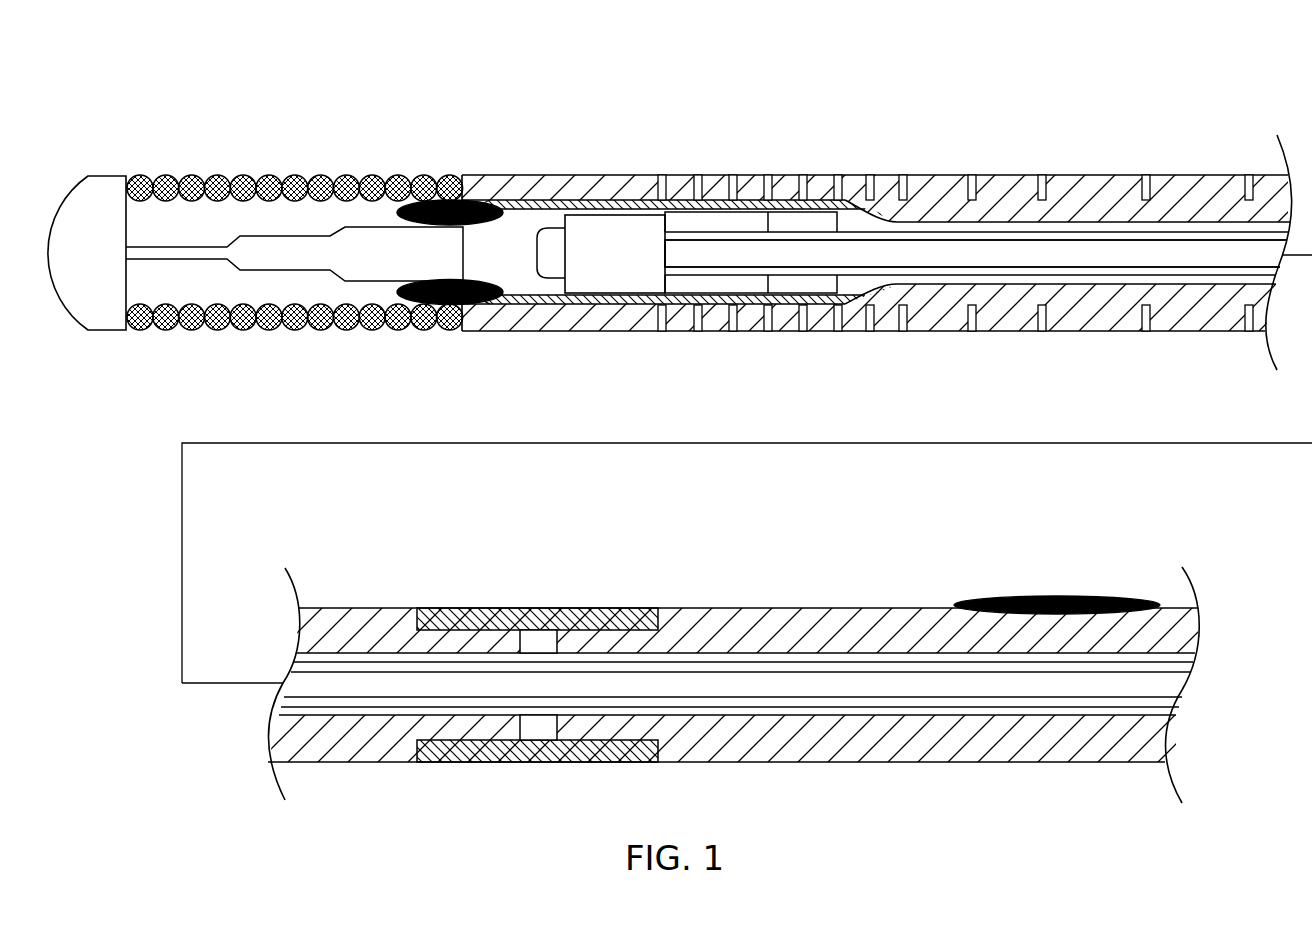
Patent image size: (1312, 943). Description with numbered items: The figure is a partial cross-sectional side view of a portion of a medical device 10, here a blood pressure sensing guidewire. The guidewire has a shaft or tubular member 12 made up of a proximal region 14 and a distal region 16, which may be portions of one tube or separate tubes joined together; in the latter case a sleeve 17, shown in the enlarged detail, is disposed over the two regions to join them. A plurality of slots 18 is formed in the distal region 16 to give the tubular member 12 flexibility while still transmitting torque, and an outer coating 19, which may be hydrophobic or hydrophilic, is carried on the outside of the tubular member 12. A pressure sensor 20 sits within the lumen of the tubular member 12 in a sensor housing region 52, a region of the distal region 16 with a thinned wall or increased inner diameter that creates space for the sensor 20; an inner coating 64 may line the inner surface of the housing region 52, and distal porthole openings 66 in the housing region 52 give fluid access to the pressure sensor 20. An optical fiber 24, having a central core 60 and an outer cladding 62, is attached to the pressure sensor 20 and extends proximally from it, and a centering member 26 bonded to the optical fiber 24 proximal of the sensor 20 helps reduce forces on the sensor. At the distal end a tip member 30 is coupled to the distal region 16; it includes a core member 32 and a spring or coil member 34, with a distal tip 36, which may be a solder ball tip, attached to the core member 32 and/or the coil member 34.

The medical device 10 is at (874, 60).
The tubular member 12 is at (876, 216).
The proximal region 14 is at (733, 673).
The distal region 16 is at (1012, 175).
The sleeve 17 is at (535, 608).
The slots 18 is at (700, 178).
The outer coating 19 is at (1055, 597).
The pressure sensor 20 is at (625, 275).
The optical fiber 24 is at (1097, 270).
The centering member 26 is at (840, 203).
The tip member 30 is at (295, 222).
The core member 32 is at (273, 255).
The spring or coil member 34 is at (297, 180).
The distal tip 36 is at (103, 195).
The sensor housing region 52 is at (892, 337).
The central core 60 is at (1208, 255).
The outer cladding 62 is at (976, 202).
The inner coating 64 is at (787, 205).
The distal porthole openings 66 is at (553, 263).